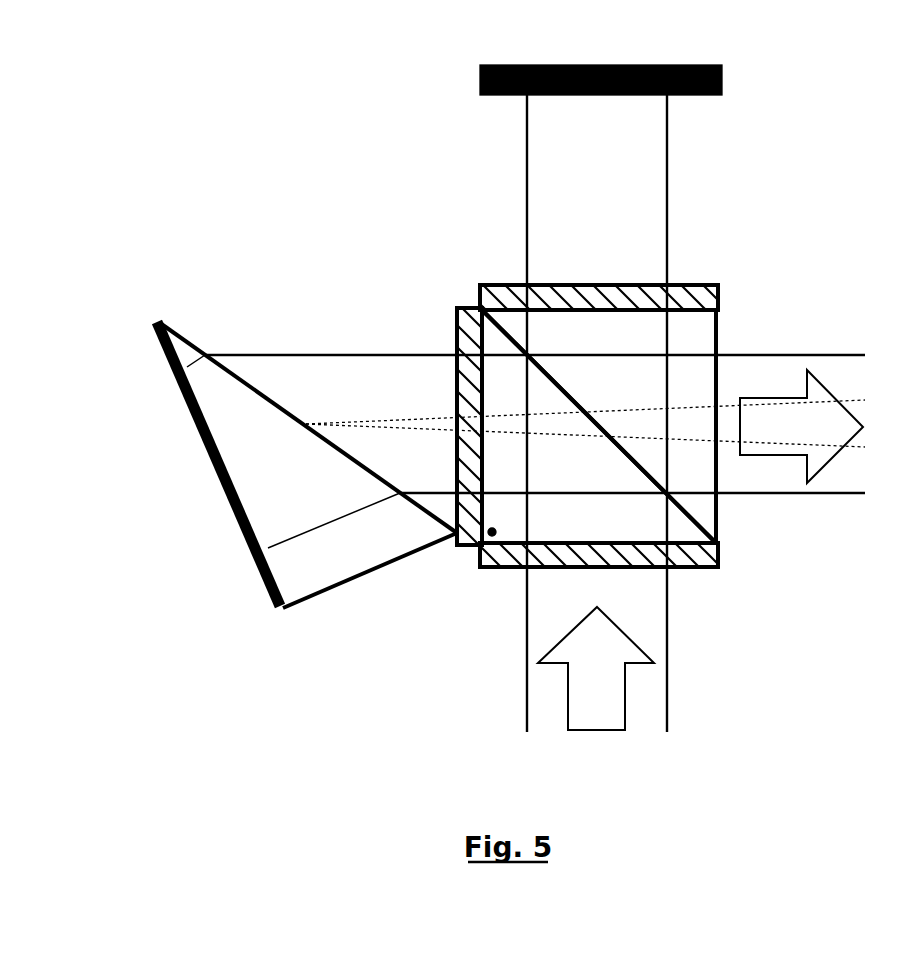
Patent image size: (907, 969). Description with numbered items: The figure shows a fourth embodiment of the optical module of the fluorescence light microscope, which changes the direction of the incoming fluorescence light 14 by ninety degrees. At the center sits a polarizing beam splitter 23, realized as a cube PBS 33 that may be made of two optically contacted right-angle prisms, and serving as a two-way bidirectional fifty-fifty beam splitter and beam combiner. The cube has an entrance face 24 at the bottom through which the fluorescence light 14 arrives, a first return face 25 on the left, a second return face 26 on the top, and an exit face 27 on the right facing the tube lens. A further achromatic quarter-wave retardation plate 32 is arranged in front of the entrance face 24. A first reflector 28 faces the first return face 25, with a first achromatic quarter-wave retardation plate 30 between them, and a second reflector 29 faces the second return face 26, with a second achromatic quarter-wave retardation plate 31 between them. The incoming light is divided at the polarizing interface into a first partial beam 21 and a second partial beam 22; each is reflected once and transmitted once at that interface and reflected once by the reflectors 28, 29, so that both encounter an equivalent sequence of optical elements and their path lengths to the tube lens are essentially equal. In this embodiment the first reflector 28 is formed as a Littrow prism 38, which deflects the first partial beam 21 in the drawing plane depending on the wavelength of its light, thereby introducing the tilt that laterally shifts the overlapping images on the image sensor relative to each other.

The incoming fluorescence light 14 is at (670, 618).
The first partial beam 21 is at (353, 350).
The second partial beam 22 is at (672, 192).
The polarizing beam splitter 23 is at (722, 527).
The entrance face 24 is at (517, 548).
The first return face 25 is at (473, 528).
The second return face 26 is at (700, 300).
The exit face 27 is at (722, 338).
The first reflector 28 is at (160, 315).
The second reflector 29 is at (478, 78).
The first achromatic quarter-wave retardation plate 30 is at (462, 305).
The second achromatic quarter-wave retardation plate 31 is at (492, 283).
The further achromatic quarter-wave retardation plate 32 is at (483, 570).
The cube PBS 33 is at (599, 426).
The Littrow prism 38 is at (320, 600).